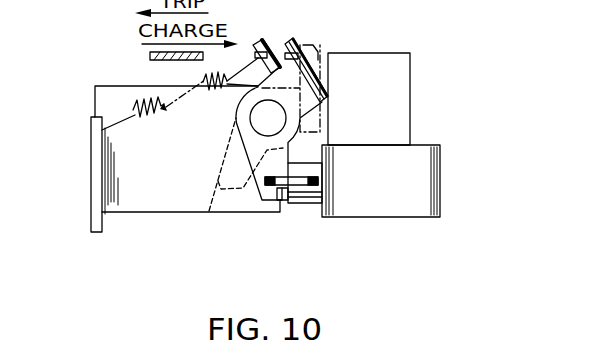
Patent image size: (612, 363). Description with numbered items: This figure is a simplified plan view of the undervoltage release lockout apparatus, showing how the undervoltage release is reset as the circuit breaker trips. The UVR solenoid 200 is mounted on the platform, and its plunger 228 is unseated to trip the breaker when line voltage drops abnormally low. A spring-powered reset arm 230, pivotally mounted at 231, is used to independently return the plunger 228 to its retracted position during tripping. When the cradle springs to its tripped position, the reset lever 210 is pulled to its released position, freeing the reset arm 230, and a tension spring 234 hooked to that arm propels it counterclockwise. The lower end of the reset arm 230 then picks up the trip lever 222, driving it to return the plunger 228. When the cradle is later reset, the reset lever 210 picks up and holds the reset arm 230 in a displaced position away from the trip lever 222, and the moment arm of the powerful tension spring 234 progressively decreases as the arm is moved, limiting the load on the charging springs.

The undervoltage release (UVR) solenoid 200 is at (435, 152).
The reset lever 210 is at (148, 57).
The trip lever 222 is at (282, 201).
The plunger 228 is at (311, 204).
The reset arm 230 is at (257, 188).
The pivot 231 is at (263, 118).
The tension spring 234 is at (153, 120).